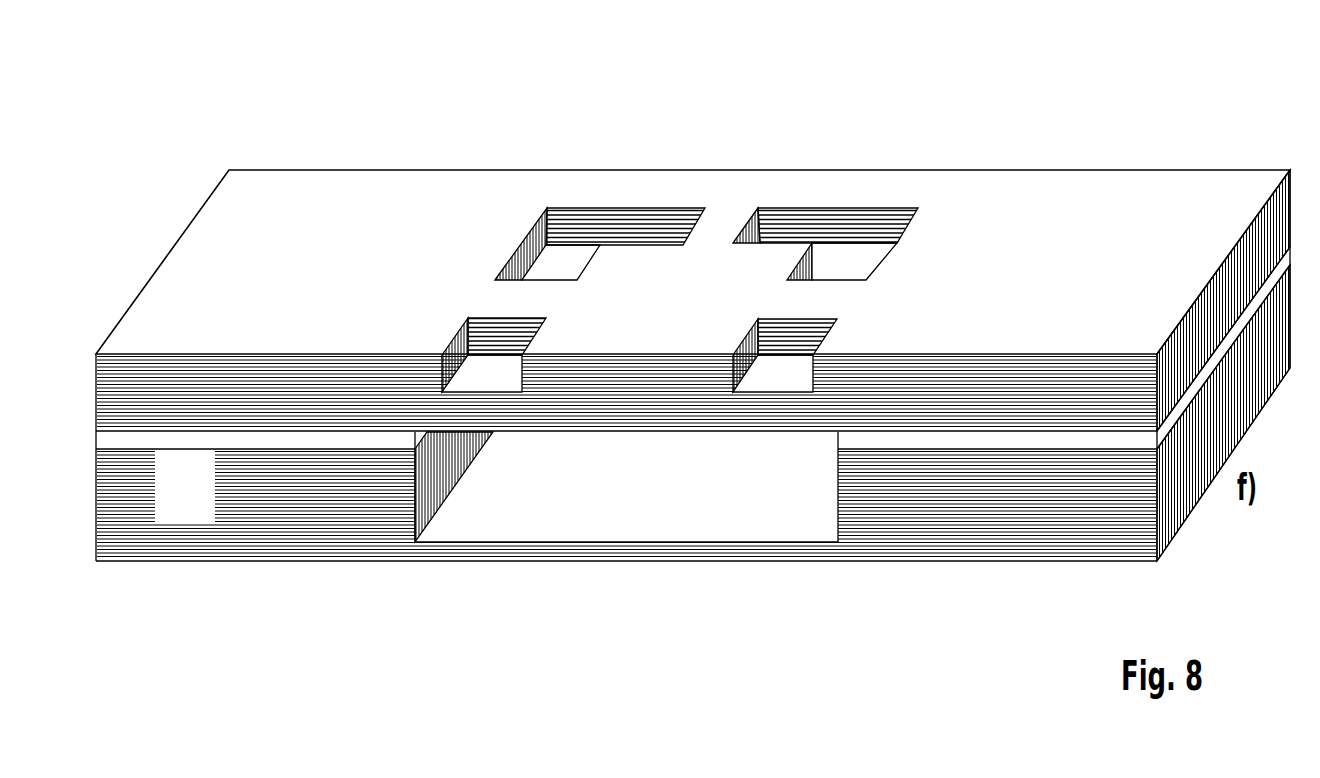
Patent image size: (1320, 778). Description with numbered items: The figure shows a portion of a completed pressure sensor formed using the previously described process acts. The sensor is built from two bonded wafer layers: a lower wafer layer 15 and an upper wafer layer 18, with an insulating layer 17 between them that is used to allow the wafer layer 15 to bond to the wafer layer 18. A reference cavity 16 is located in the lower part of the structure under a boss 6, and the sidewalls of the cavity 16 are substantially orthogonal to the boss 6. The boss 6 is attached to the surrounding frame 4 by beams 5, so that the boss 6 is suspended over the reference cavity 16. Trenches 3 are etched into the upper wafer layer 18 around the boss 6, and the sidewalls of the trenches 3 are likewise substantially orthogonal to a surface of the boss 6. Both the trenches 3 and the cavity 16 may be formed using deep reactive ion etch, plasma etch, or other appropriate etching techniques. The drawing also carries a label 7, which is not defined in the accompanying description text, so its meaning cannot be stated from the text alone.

The trenches 3 is at (563, 249).
The frame 4 is at (693, 365).
The beams 5 is at (515, 285).
The boss 6 is at (655, 304).
The side wall of layer 7 is at (476, 422).
The wafer layer 15 is at (693, 413).
The reference cavity 16 is at (626, 375).
The insulating layer 17 is at (1030, 421).
The wafer layer 18 is at (278, 406).